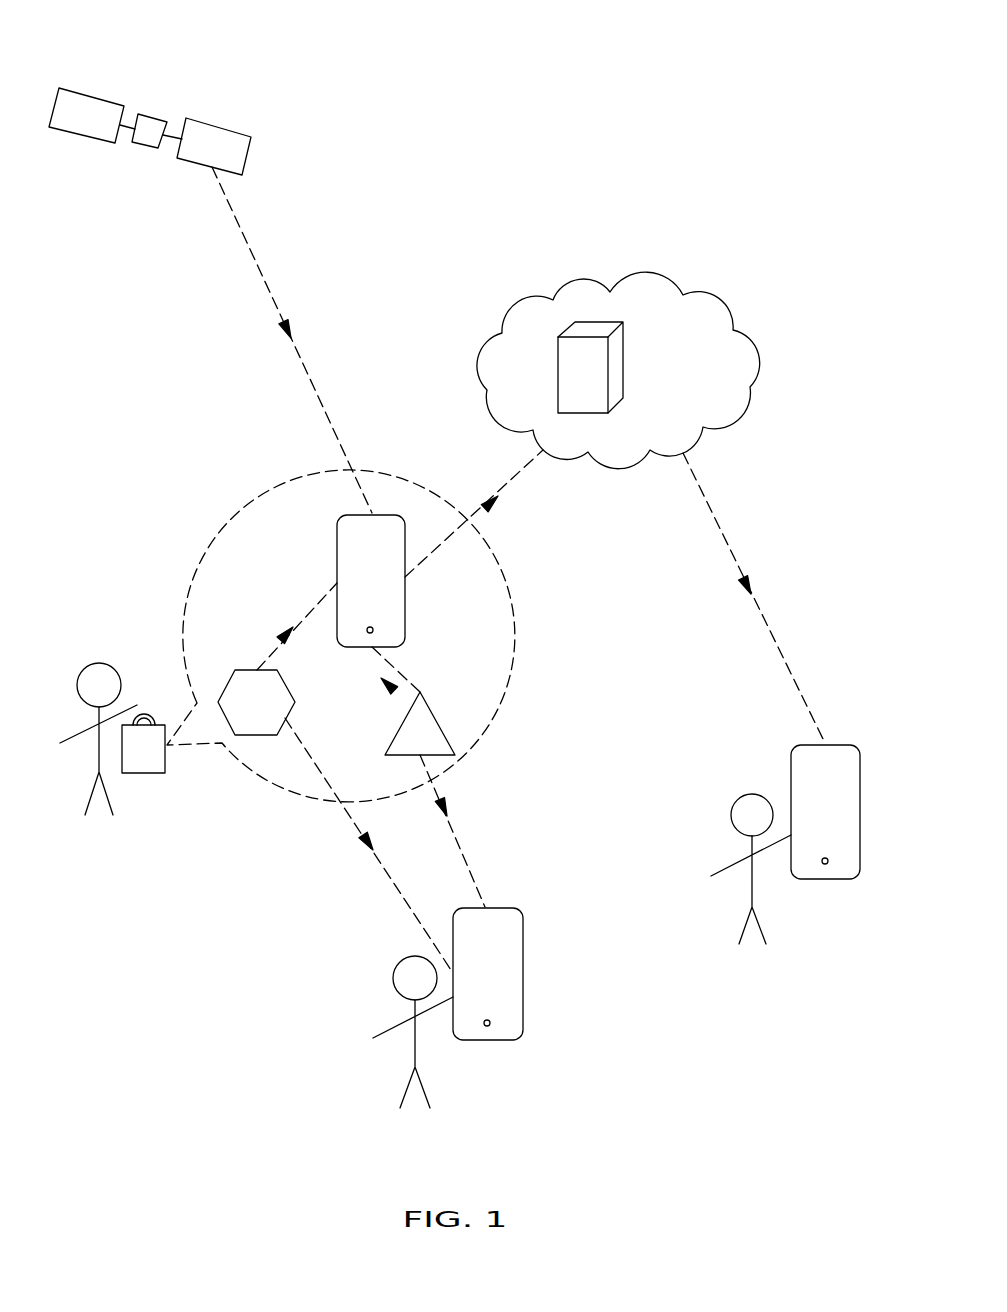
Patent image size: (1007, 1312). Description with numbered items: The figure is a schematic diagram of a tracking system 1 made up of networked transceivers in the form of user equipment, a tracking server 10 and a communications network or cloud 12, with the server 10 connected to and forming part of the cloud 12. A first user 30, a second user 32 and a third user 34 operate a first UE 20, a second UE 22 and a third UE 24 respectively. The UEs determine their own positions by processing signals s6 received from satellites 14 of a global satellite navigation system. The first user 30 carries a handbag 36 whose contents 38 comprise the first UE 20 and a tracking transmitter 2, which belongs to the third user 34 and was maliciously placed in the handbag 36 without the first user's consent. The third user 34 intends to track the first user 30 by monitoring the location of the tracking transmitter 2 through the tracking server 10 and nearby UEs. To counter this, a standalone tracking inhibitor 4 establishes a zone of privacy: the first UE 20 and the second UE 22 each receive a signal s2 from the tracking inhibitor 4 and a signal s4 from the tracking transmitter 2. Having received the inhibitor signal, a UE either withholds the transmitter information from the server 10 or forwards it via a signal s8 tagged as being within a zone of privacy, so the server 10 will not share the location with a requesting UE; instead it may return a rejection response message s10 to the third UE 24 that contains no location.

The tracking system 1 is at (197, 46).
The satellites 14 is at (238, 133).
The signals s6 is at (263, 278).
The communications network (cloud) 12 is at (640, 273).
The tracking server 10 is at (625, 360).
The signal s8 is at (520, 472).
The rejection response message s10 is at (782, 653).
The contents 38 is at (250, 518).
The first UE 20 is at (361, 583).
The tracking inhibitor 4 is at (248, 713).
The tracking transmitter 2 is at (413, 743).
The signal s2 is at (303, 613).
The signal s4 is at (377, 667).
The first user 30 is at (103, 663).
The handbag 36 is at (145, 775).
The second UE 22 is at (523, 973).
The second user 32 is at (423, 1085).
The third UE 24 is at (862, 813).
The third user 34 is at (760, 924).